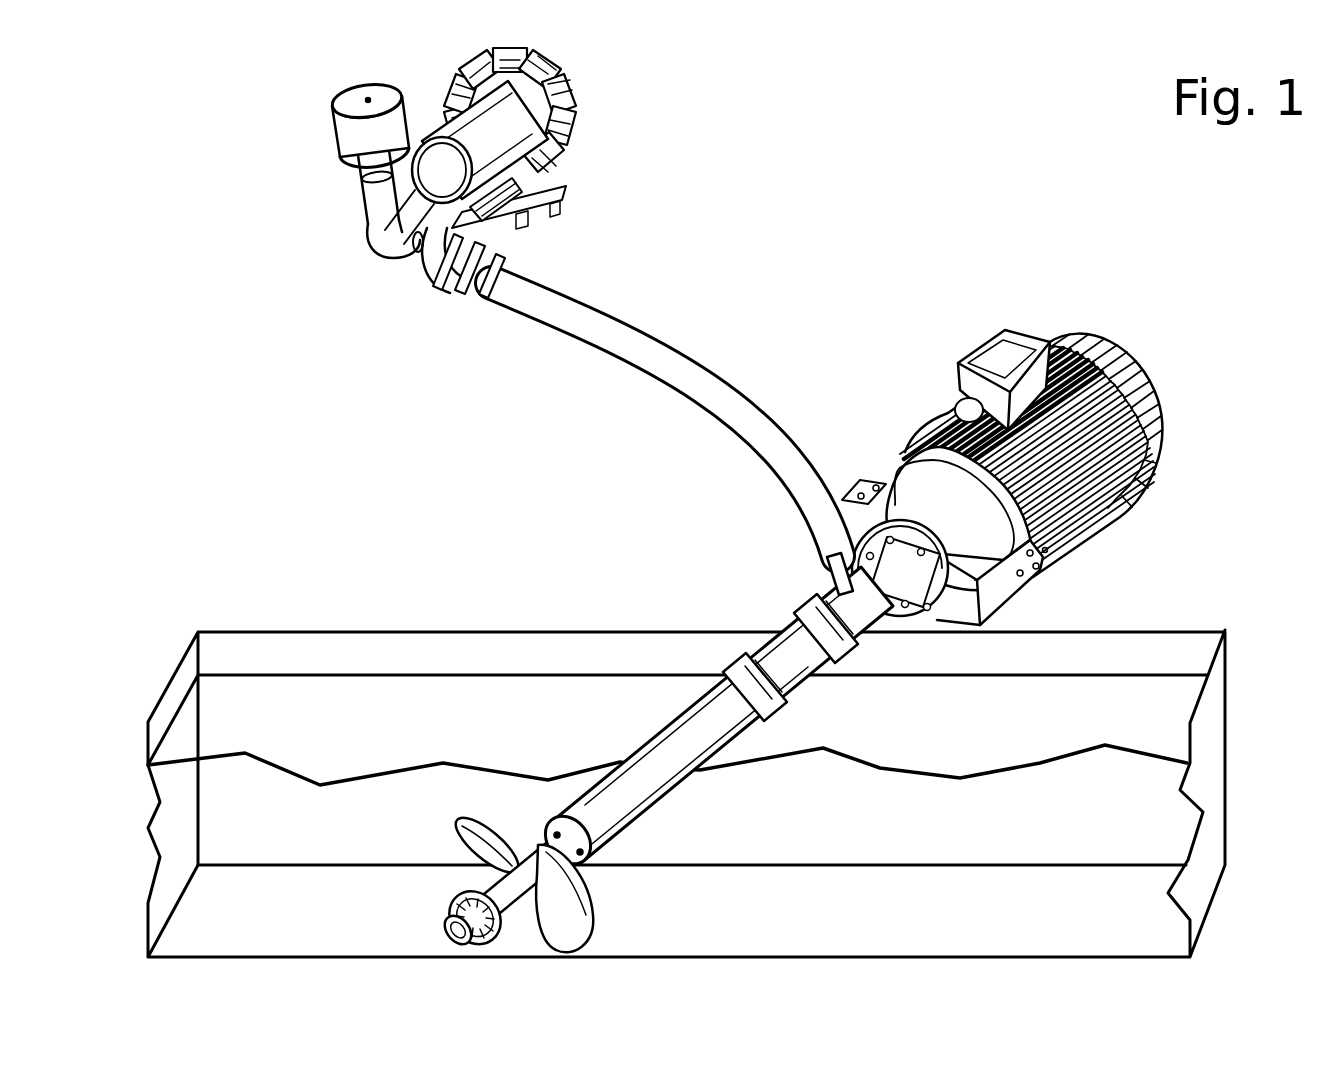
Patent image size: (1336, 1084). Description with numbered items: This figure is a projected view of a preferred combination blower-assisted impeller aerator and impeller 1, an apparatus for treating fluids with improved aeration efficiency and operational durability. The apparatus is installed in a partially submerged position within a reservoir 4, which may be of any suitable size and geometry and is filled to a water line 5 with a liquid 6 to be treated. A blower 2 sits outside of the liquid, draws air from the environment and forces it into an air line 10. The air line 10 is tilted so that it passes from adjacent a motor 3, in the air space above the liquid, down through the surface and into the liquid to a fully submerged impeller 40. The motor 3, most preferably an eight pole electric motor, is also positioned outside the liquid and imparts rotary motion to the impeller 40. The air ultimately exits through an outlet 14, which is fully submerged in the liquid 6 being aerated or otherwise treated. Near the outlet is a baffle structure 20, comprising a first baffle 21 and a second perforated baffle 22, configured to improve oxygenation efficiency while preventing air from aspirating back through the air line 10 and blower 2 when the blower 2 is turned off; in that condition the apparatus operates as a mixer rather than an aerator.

The combination blower-assisted impeller aerator and impeller 1 is at (178, 115).
The blower 2 is at (358, 133).
The motor 3 is at (1165, 430).
The reservoir 4 is at (1230, 653).
The water line 5 is at (1132, 750).
The liquid 6 is at (1140, 823).
The air line 10 is at (808, 662).
The outlet 14 is at (447, 935).
The baffle structure 20 is at (498, 880).
The first baffle 21 is at (470, 878).
The second perforated baffle 22 is at (440, 912).
The impeller 40 is at (577, 903).